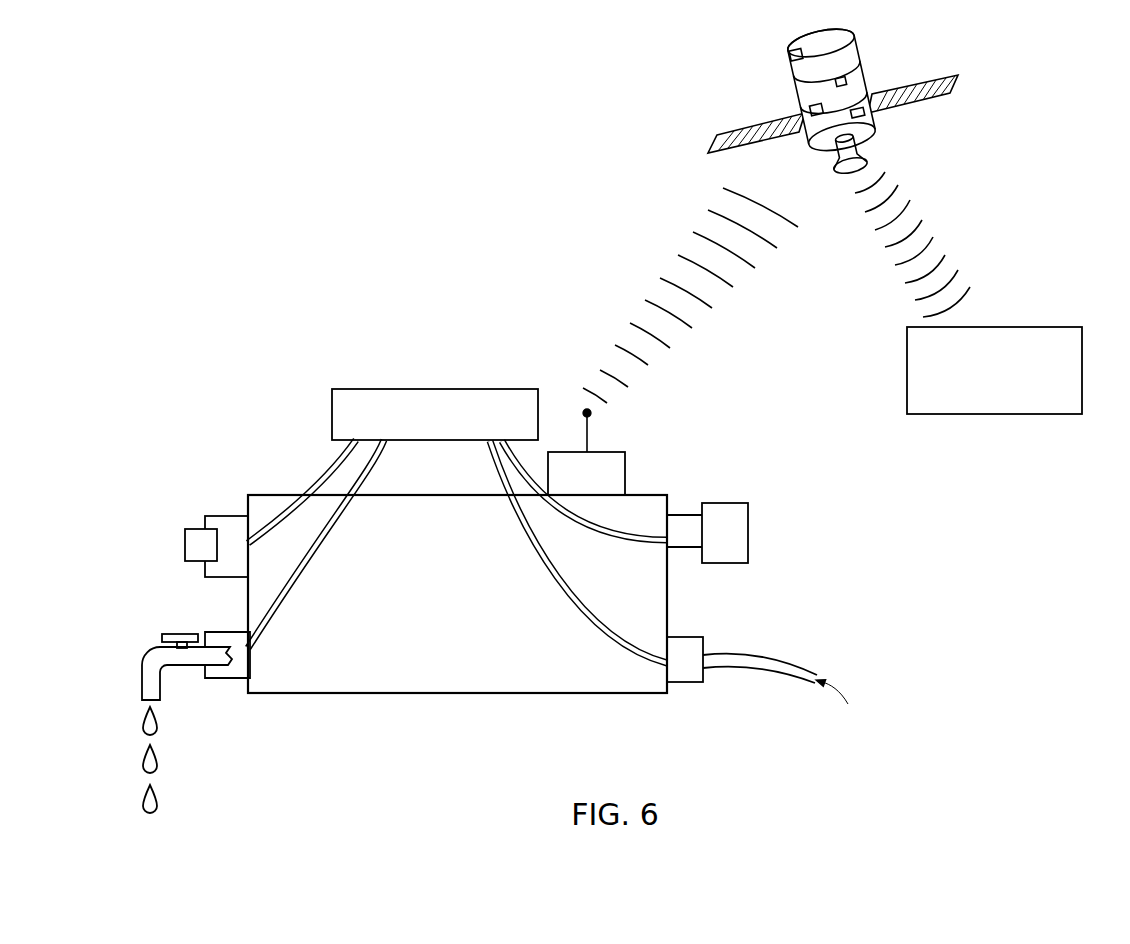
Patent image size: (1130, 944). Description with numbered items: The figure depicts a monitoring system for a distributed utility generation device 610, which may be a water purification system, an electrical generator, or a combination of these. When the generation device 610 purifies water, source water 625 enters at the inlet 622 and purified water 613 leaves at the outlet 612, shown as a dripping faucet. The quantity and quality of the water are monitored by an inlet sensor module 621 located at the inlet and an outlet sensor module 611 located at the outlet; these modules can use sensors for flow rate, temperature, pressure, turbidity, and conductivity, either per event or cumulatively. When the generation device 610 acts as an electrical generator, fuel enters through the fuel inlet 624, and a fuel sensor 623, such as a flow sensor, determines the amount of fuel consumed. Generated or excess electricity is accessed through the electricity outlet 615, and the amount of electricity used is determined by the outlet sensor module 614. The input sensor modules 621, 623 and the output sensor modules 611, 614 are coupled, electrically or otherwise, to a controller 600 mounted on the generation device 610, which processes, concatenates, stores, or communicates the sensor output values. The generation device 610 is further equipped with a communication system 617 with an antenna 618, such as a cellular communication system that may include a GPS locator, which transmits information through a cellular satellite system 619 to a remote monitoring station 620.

The controller 600 is at (477, 387).
The generation device 610 is at (445, 621).
The outlet sensor module 611 is at (222, 679).
The outlet 612 is at (142, 673).
The purified water 613 is at (145, 756).
The outlet sensor module 614 is at (216, 578).
The electricity outlet 615 is at (186, 533).
The communication system 617 is at (573, 479).
The antenna 618 is at (590, 433).
The cellular satellite system 619 is at (786, 56).
The monitoring station 620 is at (977, 382).
The inlet sensor module 621 is at (683, 684).
The inlet 622 is at (778, 657).
The fuel sensor 623 is at (680, 513).
The fuel inlet 624 is at (752, 520).
The source water 625 is at (848, 703).